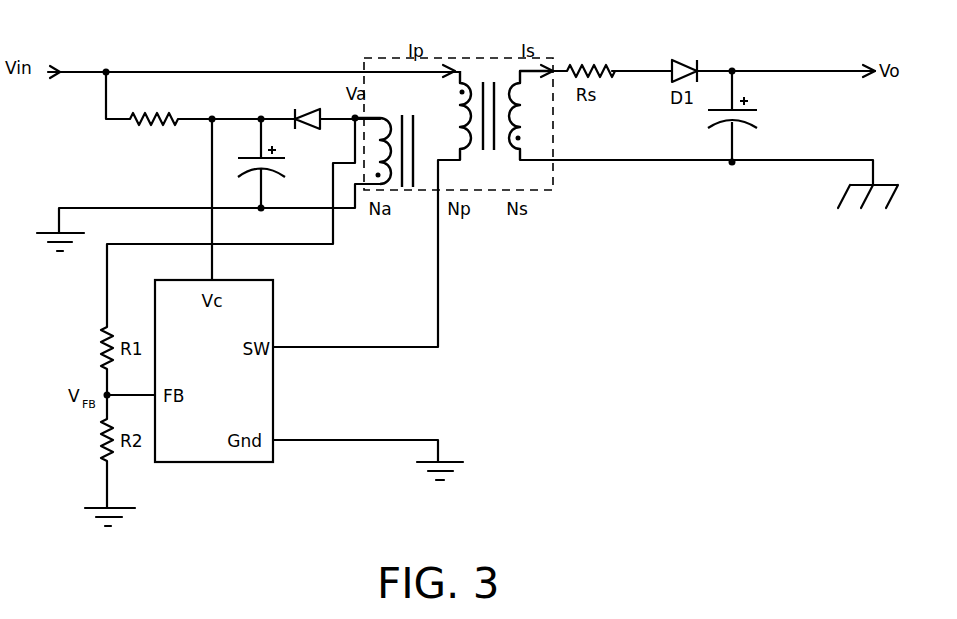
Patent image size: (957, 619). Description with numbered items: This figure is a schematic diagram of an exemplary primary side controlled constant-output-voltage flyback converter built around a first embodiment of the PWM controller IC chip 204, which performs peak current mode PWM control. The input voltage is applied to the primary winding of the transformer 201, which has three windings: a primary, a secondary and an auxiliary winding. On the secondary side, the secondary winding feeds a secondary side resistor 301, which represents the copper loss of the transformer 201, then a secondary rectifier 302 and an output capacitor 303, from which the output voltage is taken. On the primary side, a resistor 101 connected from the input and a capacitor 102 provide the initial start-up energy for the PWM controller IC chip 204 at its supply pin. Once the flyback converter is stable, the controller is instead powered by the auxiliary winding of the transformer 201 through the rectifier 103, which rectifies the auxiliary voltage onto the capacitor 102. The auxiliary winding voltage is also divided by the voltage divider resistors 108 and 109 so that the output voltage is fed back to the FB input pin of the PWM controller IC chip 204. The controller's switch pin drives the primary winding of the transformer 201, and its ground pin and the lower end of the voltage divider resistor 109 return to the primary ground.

The resistor 101 is at (158, 126).
The capacitor 102 is at (278, 172).
The rectifier 103 is at (311, 130).
The voltage divider resistor 108 is at (104, 363).
The voltage divider resistor 109 is at (104, 455).
The transformer 201 is at (466, 58).
The PWM controller IC chip 204 is at (214, 371).
The secondary side resistor 301 is at (591, 64).
The secondary rectifier 302 is at (680, 59).
The output capacitor 303 is at (757, 127).